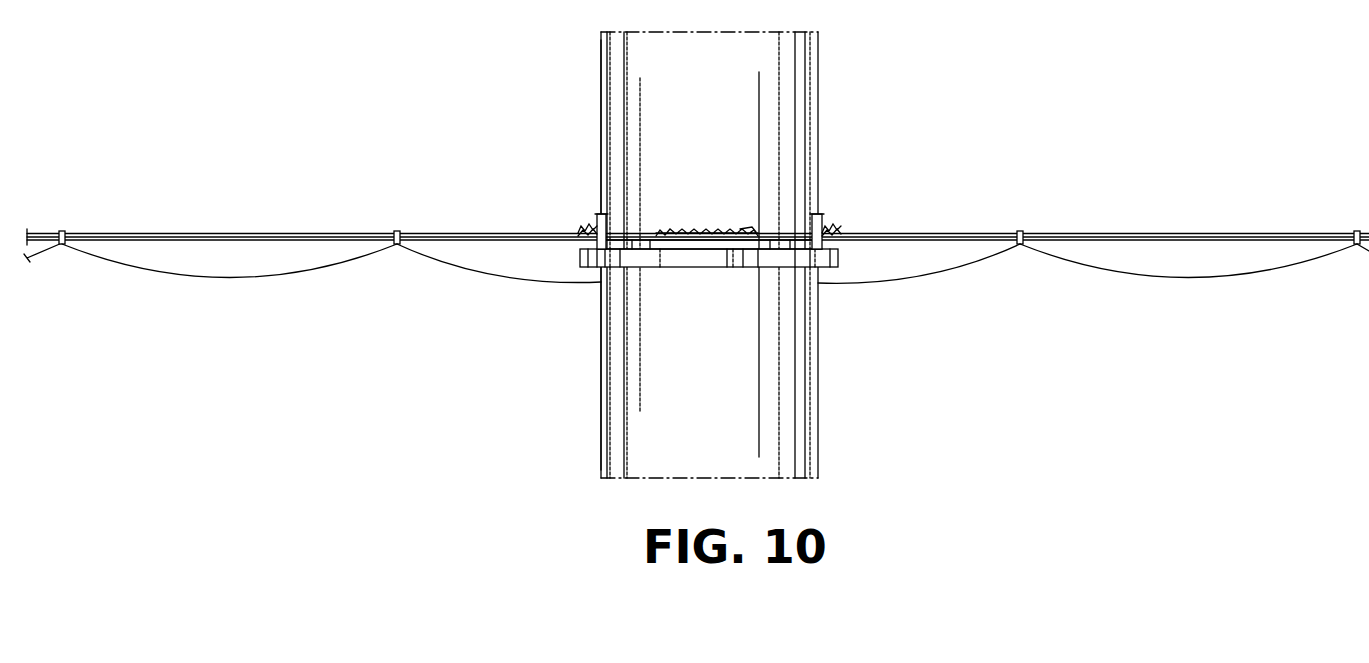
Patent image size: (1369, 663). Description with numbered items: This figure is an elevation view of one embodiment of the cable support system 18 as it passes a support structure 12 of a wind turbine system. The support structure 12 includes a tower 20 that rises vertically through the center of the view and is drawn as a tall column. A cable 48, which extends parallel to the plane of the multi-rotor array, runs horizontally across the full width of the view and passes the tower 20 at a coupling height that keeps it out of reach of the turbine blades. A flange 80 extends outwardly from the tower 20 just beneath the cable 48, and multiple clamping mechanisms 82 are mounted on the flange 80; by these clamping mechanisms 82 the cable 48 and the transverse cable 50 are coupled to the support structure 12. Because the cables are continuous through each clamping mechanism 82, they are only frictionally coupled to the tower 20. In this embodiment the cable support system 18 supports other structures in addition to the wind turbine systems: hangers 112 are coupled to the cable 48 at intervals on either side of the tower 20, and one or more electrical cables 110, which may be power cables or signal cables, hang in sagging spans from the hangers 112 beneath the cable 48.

The support structure 12 is at (822, 67).
The tower 20 is at (600, 52).
The cable support system 18 is at (183, 224).
The cable 48 is at (214, 233).
The cable 50 is at (595, 220).
The flange 80 is at (580, 258).
The clamping mechanism 82 is at (582, 228).
The electrical cable 110 is at (164, 279).
The hanger 112 is at (397, 230).